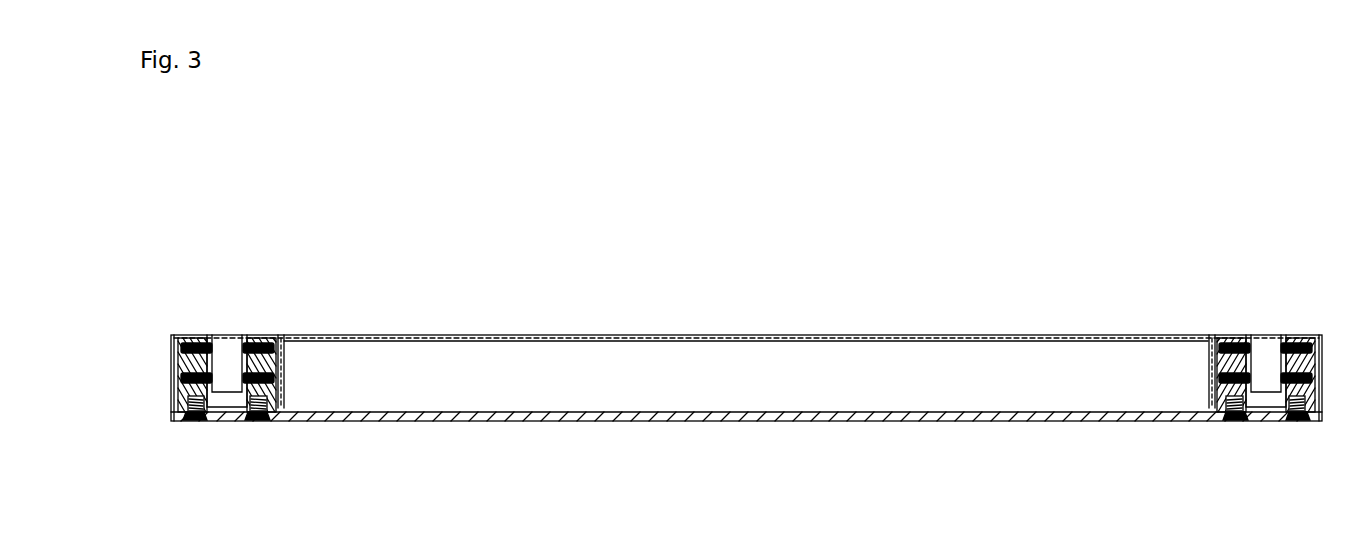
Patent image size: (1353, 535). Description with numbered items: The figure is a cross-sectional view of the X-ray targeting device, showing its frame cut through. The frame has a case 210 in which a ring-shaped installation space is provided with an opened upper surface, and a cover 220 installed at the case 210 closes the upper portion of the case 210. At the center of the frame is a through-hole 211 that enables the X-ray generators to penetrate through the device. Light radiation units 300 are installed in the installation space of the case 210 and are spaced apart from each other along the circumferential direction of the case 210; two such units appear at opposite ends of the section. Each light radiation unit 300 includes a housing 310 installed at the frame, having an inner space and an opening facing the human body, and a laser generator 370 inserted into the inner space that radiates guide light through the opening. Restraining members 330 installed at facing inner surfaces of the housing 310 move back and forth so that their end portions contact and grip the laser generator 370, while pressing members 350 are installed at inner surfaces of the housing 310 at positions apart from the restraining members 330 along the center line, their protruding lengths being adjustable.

The case 210 is at (171, 372).
The through-hole 211 is at (447, 370).
The cover 220 is at (183, 337).
The light radiation unit 300 is at (1279, 316).
The housing 310 is at (253, 340).
The restraining member 330 is at (279, 337).
The pressing member 350 is at (282, 403).
The laser generator 370 is at (227, 347).